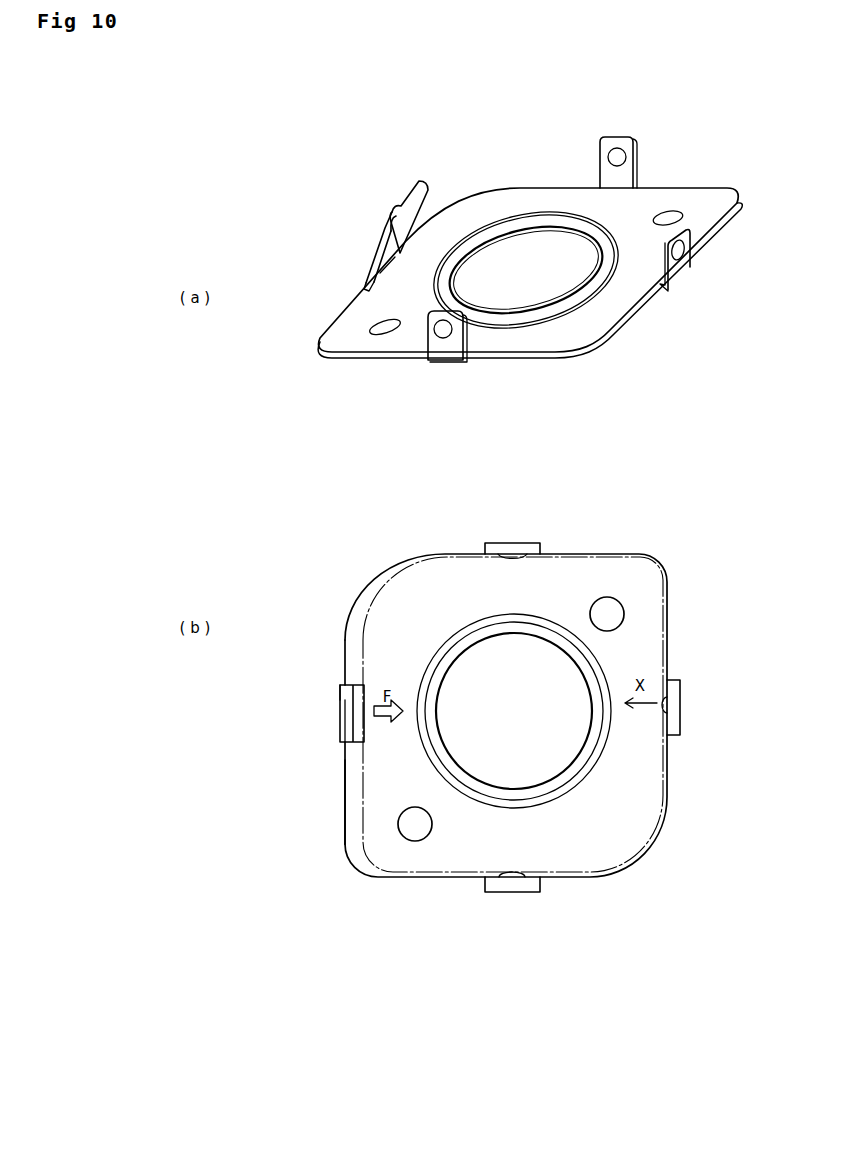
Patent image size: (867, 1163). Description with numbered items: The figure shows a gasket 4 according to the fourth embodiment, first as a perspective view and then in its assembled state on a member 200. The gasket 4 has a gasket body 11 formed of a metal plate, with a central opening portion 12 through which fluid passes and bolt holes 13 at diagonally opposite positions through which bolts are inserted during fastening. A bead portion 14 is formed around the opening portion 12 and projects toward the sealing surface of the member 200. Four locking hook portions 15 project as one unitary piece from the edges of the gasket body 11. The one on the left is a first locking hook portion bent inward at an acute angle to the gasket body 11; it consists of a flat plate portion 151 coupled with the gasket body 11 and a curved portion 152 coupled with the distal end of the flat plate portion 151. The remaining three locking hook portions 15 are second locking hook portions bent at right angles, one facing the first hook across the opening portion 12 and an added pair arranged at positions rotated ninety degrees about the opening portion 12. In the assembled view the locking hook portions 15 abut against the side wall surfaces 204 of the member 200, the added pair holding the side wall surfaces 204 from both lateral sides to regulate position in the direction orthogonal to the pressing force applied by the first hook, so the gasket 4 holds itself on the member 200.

The gasket 4 is at (553, 137).
The gasket body 11 is at (660, 197).
The opening portion 12 is at (530, 231).
The bolt holes 13 is at (376, 322).
The bead portion 14 is at (507, 219).
The locking hook portion 15 is at (512, 946).
The flat plate portion 151 is at (380, 247).
The curved portion 152 is at (390, 215).
The member 200 is at (650, 797).
The side wall surfaces 204 is at (365, 826).